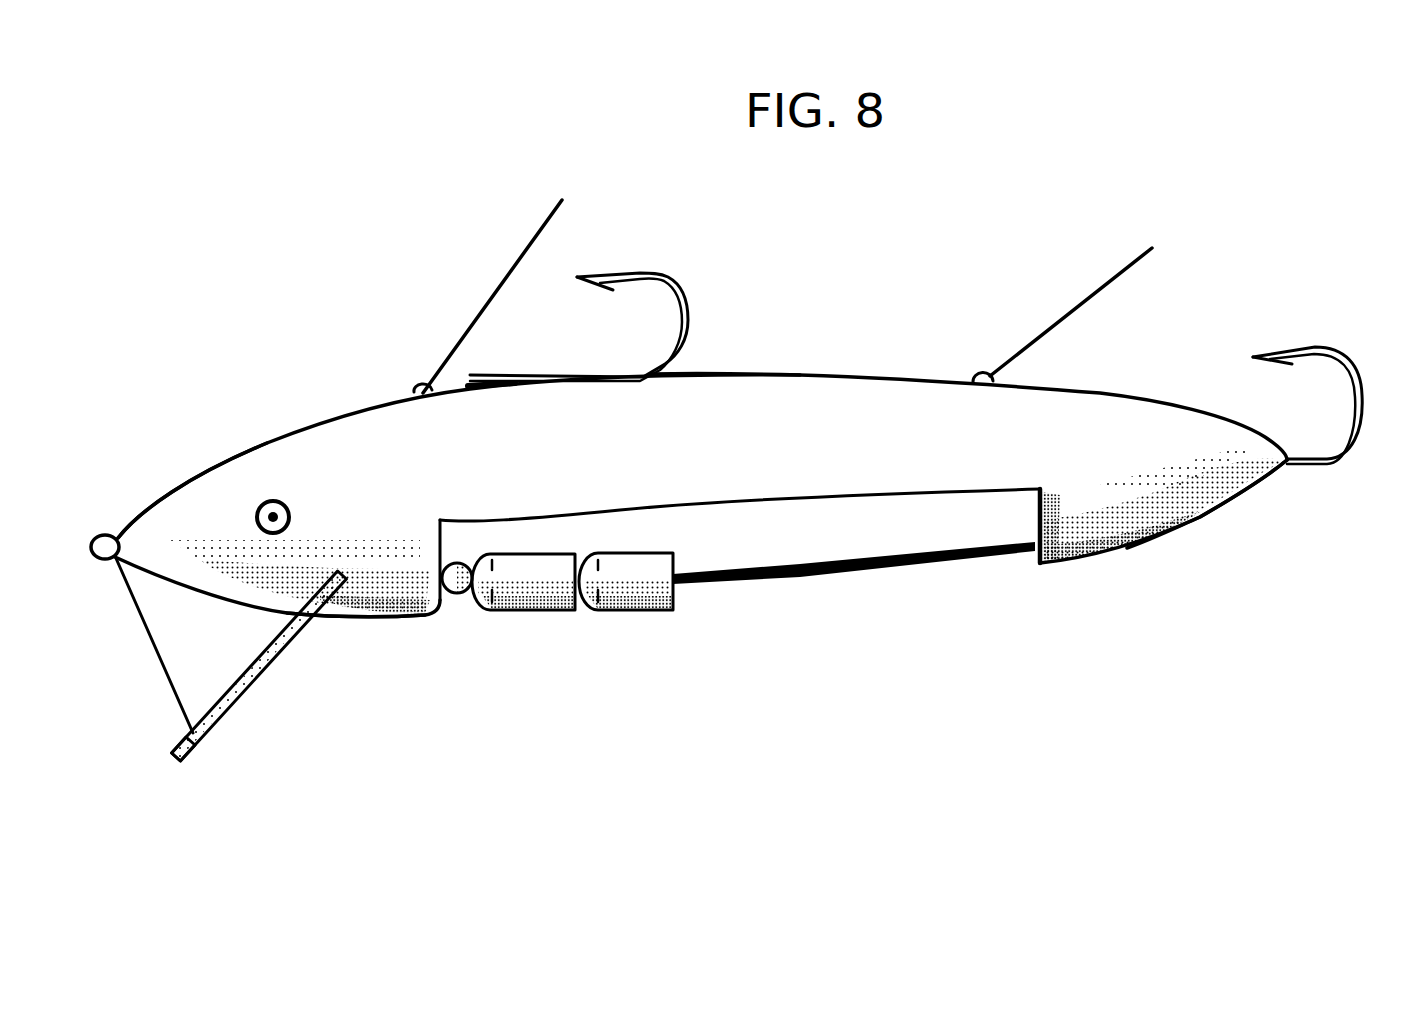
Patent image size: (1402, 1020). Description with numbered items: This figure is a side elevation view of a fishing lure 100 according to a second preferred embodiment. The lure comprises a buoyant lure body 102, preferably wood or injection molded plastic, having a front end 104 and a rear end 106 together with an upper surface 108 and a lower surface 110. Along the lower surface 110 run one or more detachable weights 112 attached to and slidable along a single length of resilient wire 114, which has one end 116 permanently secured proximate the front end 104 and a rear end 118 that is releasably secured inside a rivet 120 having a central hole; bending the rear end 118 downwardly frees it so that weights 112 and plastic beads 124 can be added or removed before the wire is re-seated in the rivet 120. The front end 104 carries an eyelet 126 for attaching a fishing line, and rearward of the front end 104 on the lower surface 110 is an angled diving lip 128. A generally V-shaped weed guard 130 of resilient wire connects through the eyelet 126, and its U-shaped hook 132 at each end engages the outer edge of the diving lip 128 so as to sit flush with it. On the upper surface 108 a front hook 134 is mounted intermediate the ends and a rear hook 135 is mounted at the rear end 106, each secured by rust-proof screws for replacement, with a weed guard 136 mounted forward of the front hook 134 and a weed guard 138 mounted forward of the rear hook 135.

The fishing lure 100 is at (877, 345).
The lure body 102 is at (799, 374).
The front end 104 is at (214, 467).
The rear end 106 is at (1127, 547).
The upper surface 108 is at (713, 375).
The lower surface 110 is at (402, 622).
The detachable weights 112 is at (533, 611).
The resilient wire 114 is at (832, 573).
The one end of wire 116 is at (440, 560).
The rear end of wire 118 is at (1033, 556).
The rivet 120 is at (1033, 543).
The plastic beads 124 is at (455, 596).
The eyelet 126 is at (107, 533).
The diving lip 128 is at (263, 665).
The weed guard 130 is at (165, 670).
The U-shaped hook 132 is at (193, 728).
The front hook 134 is at (637, 270).
The rear hook 135 is at (1298, 342).
The weed guard 136 is at (492, 307).
The weed guard 138 is at (1057, 325).